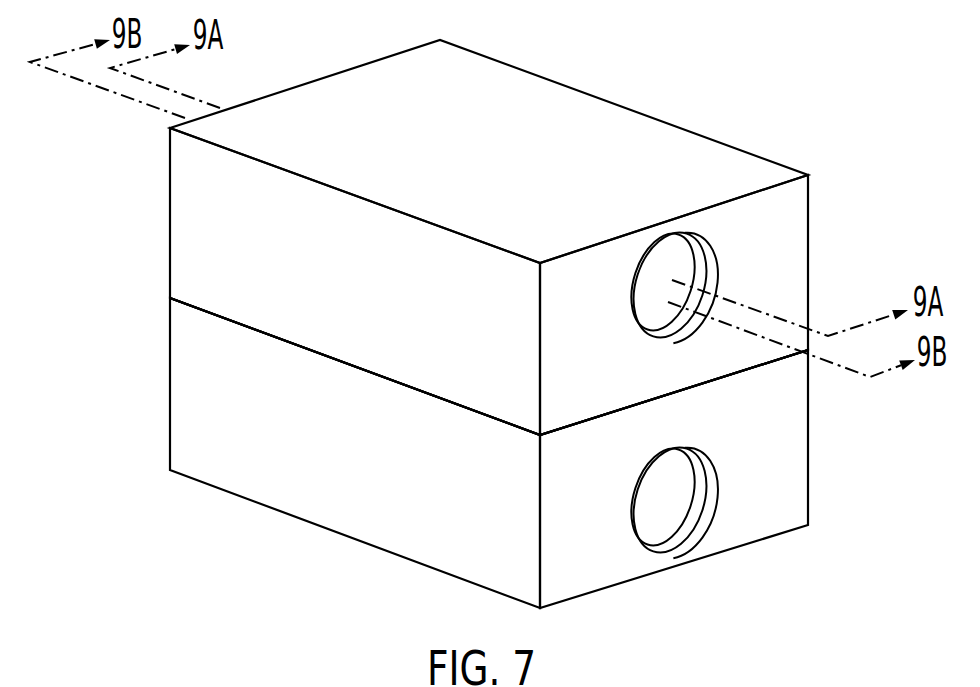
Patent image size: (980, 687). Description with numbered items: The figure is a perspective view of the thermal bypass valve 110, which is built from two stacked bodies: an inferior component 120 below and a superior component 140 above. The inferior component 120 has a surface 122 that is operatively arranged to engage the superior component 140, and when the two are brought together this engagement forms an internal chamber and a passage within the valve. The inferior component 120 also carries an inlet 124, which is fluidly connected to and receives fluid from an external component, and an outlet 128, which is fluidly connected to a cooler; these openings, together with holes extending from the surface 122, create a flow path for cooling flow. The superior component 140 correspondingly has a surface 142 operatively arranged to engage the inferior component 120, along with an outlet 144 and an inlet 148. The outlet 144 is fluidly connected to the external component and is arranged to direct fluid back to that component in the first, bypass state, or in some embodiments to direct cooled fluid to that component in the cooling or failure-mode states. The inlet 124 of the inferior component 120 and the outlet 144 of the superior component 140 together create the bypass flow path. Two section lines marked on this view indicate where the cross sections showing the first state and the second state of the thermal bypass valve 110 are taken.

The thermal bypass valve 110 is at (478, 312).
The inferior component 120 is at (436, 455).
The surface 122 is at (258, 335).
The inlet 124 is at (694, 529).
The outlet 128 is at (141, 374).
The superior component 140 is at (472, 231).
The surface 142 is at (222, 318).
The outlet 144 is at (712, 272).
The inlet 148 is at (149, 227).